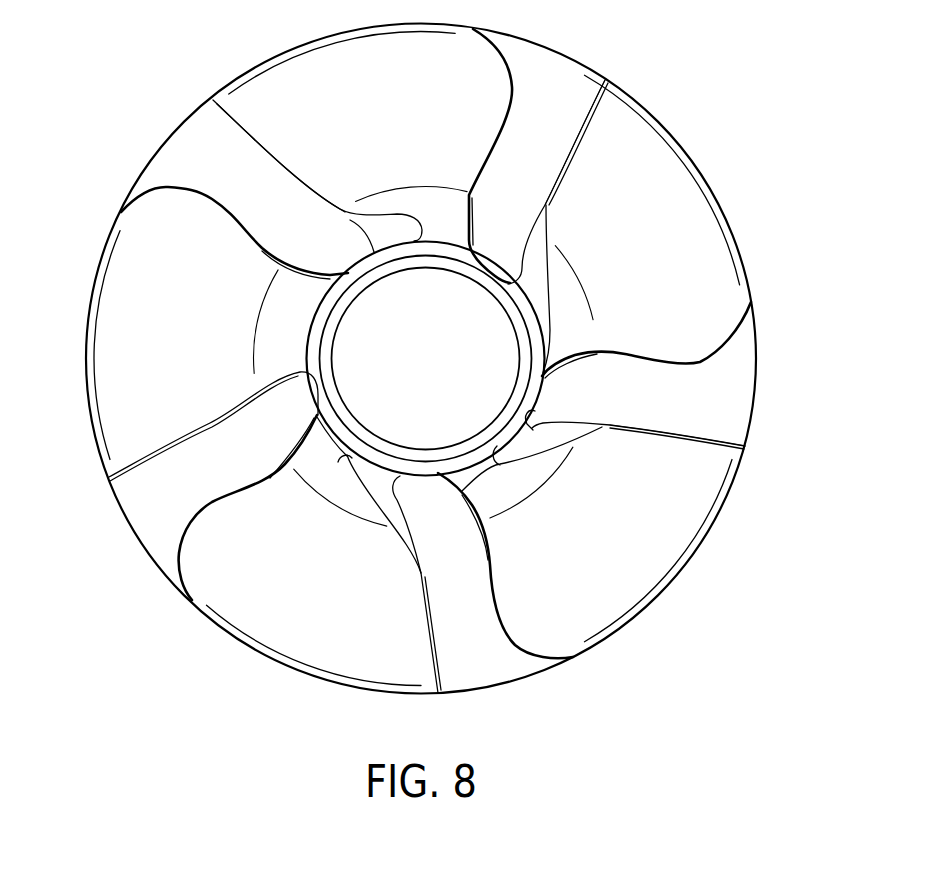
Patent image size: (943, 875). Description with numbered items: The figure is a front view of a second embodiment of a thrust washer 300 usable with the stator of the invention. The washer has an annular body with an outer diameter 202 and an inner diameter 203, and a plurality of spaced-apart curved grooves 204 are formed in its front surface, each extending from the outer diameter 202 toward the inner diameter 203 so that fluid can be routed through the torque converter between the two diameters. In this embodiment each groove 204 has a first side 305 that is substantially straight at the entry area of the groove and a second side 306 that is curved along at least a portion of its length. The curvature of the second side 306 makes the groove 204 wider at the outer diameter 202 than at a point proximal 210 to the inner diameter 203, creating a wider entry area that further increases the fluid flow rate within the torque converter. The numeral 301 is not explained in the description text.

The thrust washer 300 is at (165, 77).
The outer diameter 202 is at (757, 382).
The rim inner edge 301 is at (112, 332).
The inner diameter 203 is at (500, 349).
The curved groove 204 is at (558, 84).
The point proximal to the inner diameter 210 is at (538, 420).
The first side 305 is at (170, 445).
The second side 306 is at (211, 198).